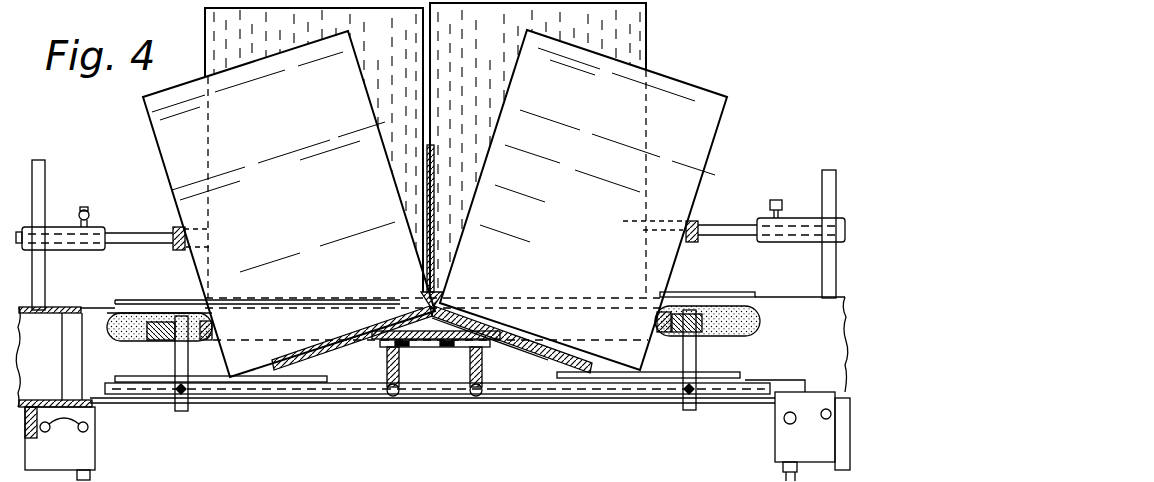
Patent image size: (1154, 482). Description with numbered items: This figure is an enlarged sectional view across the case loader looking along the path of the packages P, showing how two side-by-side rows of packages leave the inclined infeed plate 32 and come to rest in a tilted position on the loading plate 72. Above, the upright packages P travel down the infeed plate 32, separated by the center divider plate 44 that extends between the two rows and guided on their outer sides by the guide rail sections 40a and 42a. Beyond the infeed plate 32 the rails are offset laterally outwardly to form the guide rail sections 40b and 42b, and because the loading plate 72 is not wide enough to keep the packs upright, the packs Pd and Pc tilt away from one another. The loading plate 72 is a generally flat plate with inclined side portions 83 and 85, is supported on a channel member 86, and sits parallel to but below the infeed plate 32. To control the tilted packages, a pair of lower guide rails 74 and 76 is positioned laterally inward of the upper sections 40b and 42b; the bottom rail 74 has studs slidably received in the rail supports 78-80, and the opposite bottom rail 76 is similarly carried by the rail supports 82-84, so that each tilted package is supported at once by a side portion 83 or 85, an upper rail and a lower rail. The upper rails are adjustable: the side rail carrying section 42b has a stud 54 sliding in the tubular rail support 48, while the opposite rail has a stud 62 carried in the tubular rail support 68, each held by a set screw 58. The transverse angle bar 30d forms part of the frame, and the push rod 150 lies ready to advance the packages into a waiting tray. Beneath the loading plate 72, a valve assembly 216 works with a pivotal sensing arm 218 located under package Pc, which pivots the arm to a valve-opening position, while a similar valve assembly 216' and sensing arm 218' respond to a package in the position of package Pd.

The packages P is at (388, 54).
The package Pd is at (306, 147).
The package Pc is at (576, 169).
The center divider plate 44 is at (434, 174).
The guide rail section 42a is at (211, 228).
The guide rail section 42b is at (176, 249).
The guide rail section 40a is at (637, 184).
The guide rail section 40b is at (692, 244).
The infeed plate 32 is at (545, 294).
The loading plate 72 is at (510, 358).
The inclined side portion 85 is at (547, 343).
The inclined side portion 83 is at (333, 348).
The channel member 86 is at (470, 375).
The tubular rail support 48 is at (60, 250).
The set screw 58 is at (88, 208).
The stud 54 is at (147, 216).
The tubular rail support 68 is at (790, 243).
The stud 62 is at (718, 224).
The transverse angle bar 30d is at (830, 334).
The lower guide rail 74 is at (214, 341).
The push rod 150 is at (152, 315).
The rail supports 78-80 is at (178, 361).
The lower guide rail 76 is at (656, 324).
The rail supports 82-84 is at (698, 358).
The sensing arm 218' is at (437, 405).
The sensing arm 218 is at (681, 405).
The valve assembly 216' is at (113, 443).
The valve assembly 216 is at (786, 436).